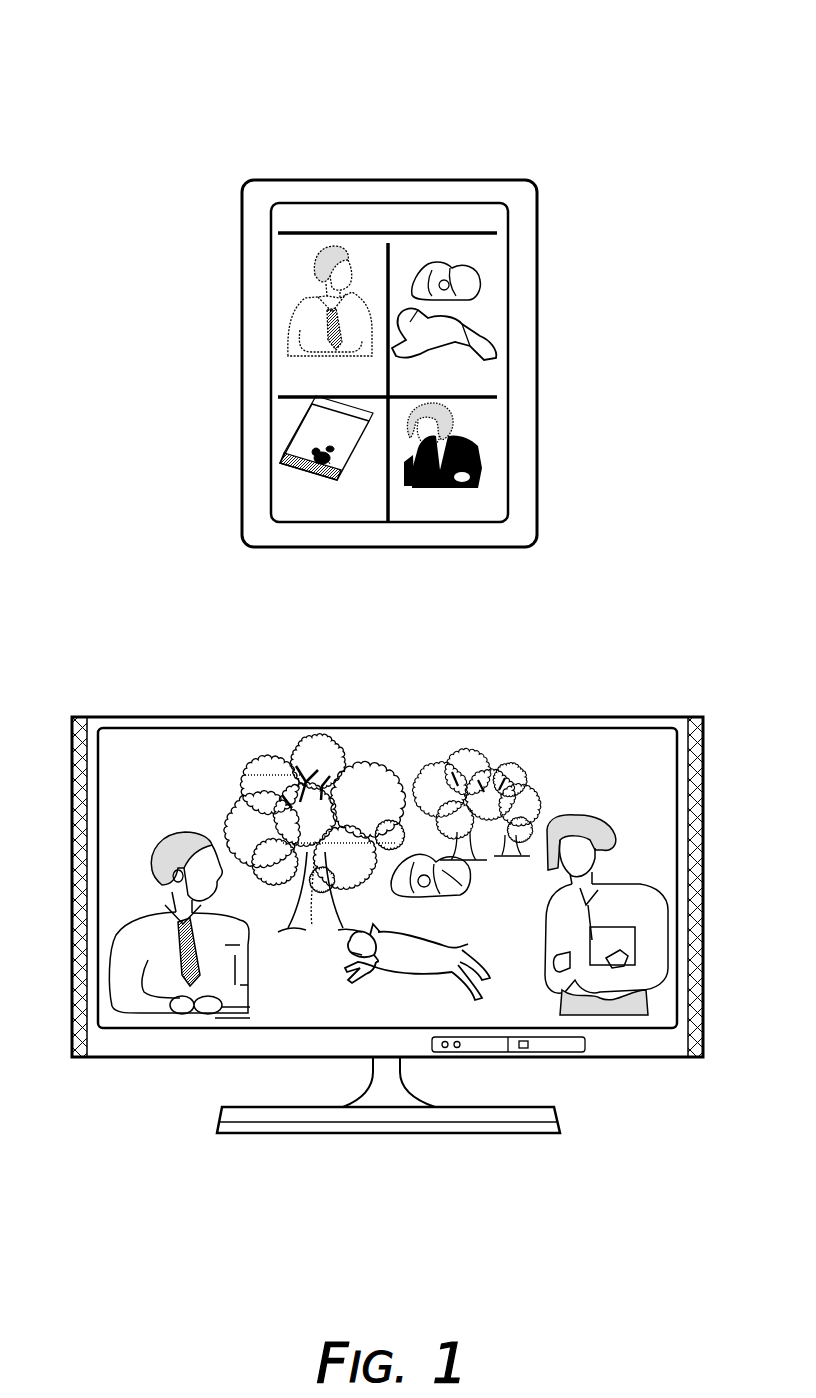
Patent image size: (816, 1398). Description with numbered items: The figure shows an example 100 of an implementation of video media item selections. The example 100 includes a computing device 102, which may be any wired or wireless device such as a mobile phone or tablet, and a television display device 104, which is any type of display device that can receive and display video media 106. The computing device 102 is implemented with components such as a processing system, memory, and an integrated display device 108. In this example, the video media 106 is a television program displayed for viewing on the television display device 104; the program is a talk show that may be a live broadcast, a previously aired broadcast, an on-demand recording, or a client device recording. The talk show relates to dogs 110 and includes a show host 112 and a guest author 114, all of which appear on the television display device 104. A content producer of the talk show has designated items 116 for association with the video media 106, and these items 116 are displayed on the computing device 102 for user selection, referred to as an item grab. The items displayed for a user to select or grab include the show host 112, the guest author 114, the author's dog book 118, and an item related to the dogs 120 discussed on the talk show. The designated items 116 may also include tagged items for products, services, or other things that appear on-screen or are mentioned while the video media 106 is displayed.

The example 100 is at (618, 78).
The computing device 102 is at (432, 180).
The television display device 104 is at (432, 717).
The video media 106 is at (568, 768).
The integrated display device 108 is at (478, 217).
The dogs 110 is at (431, 1012).
The show host 112 is at (283, 473).
The guest author 114 is at (493, 440).
The items 116 is at (317, 228).
The dog book 118 is at (283, 352).
The item related to the dogs 120 is at (493, 312).